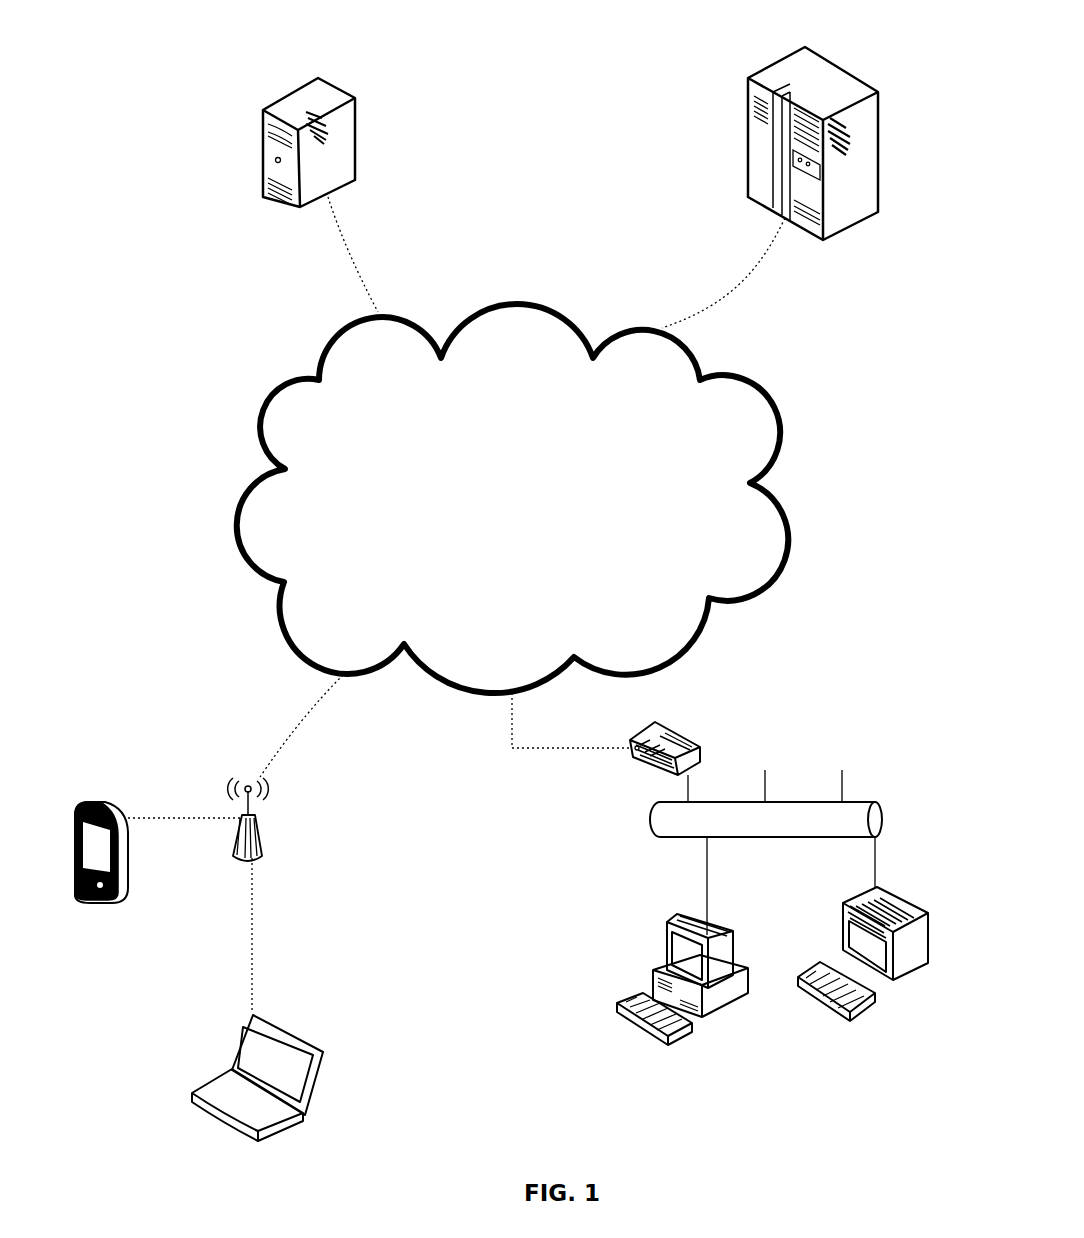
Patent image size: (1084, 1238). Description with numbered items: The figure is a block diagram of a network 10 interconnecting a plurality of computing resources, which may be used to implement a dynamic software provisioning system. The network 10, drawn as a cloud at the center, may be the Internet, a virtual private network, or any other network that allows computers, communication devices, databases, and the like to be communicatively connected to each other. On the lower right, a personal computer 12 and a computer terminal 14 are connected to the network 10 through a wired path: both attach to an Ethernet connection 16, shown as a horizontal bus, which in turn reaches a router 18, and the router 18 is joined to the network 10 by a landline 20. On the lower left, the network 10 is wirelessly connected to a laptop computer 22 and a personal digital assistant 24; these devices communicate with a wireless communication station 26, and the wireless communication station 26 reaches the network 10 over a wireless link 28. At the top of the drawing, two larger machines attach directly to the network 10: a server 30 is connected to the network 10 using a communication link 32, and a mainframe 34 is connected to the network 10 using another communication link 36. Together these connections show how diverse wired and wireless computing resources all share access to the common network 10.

The network 10 is at (512, 498).
The personal computer 12 is at (677, 941).
The computer terminal 14 is at (867, 929).
The Ethernet connection 16 is at (766, 803).
The router 18 is at (704, 757).
The landline 20 is at (564, 743).
The laptop computer 22 is at (268, 1085).
The personal digital assistant 24 is at (158, 818).
The wireless communication station 26 is at (271, 895).
The wireless link 28 is at (301, 726).
The server 30 is at (327, 142).
The communication link 32 is at (366, 254).
The mainframe 34 is at (813, 163).
The communication link 36 is at (723, 273).